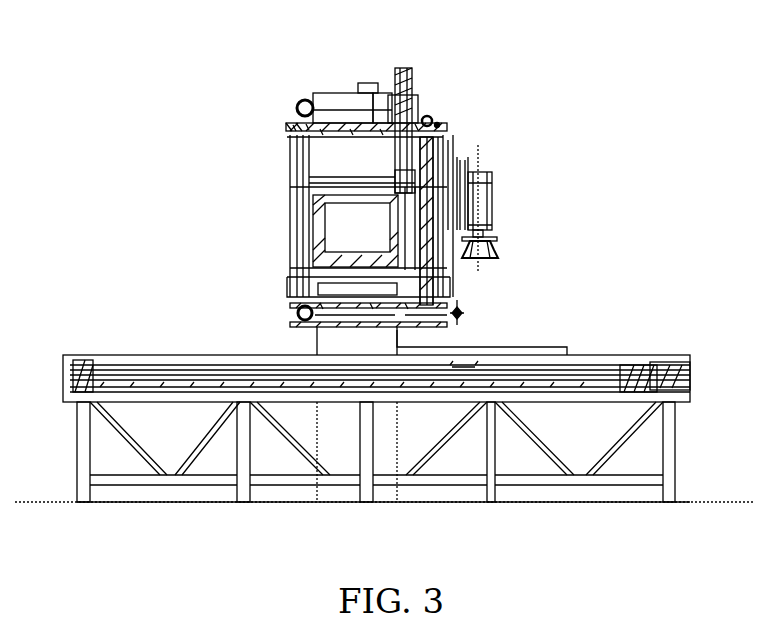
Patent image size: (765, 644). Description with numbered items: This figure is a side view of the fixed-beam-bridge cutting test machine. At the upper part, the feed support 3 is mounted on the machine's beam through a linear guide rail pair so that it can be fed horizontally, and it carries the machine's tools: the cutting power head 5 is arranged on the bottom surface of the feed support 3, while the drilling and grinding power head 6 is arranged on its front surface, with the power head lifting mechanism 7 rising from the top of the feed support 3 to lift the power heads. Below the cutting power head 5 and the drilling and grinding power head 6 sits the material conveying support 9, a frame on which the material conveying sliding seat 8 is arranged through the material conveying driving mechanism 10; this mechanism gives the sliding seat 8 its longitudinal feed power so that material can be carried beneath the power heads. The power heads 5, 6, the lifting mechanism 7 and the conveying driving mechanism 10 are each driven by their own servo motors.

The feed support 3 is at (288, 133).
The cutting power head 5 is at (453, 305).
The drilling and grinding power head 6 is at (487, 202).
The power head lifting mechanism 7 is at (398, 72).
The material conveying sliding seat 8 is at (513, 353).
The material conveying support 9 is at (673, 443).
The material conveying driving mechanism 10 is at (667, 362).